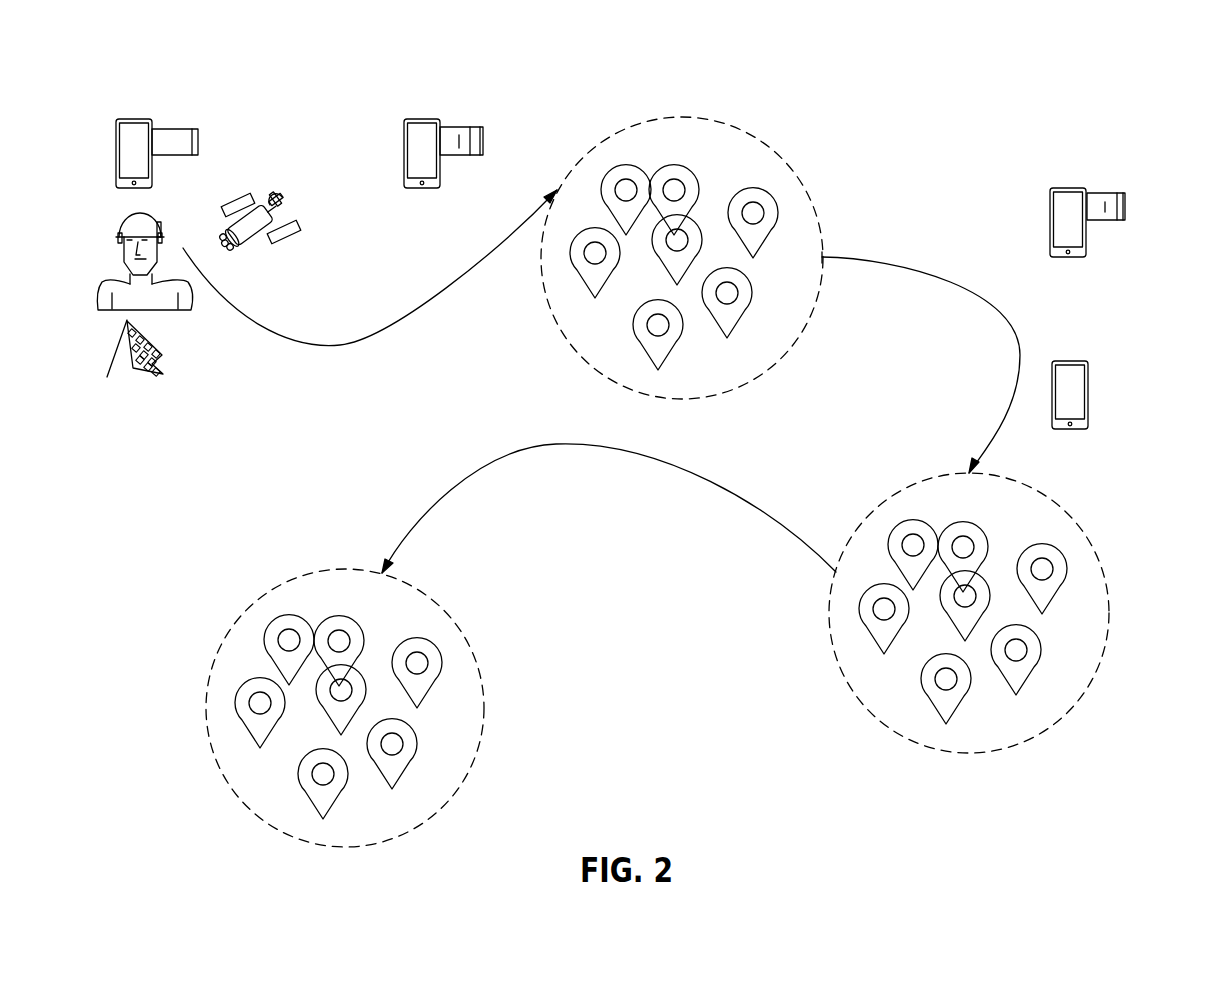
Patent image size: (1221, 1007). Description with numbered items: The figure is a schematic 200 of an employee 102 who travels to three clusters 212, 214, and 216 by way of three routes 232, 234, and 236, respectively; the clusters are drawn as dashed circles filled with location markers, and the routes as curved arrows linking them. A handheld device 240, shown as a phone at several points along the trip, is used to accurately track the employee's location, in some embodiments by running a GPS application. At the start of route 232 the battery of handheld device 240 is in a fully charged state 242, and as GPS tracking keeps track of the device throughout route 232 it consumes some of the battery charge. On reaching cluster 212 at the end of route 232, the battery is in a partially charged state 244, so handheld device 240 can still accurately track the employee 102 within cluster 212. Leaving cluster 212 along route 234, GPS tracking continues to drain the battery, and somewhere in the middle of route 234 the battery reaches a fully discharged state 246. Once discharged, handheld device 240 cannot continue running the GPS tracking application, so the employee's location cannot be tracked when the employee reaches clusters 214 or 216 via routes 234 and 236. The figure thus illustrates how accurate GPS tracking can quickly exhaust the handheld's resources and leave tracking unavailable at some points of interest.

The user 102 is at (112, 237).
The schematic 200 is at (1060, 114).
The cluster 212 is at (577, 164).
The cluster 214 is at (1087, 534).
The cluster 216 is at (242, 617).
The route 232 is at (453, 295).
The route 234 is at (923, 267).
The route 236 is at (485, 464).
The handheld device 240 is at (116, 128).
The fully charged state 242 is at (180, 129).
The partially charged state 244 is at (462, 127).
The fully discharged state 246 is at (1125, 200).